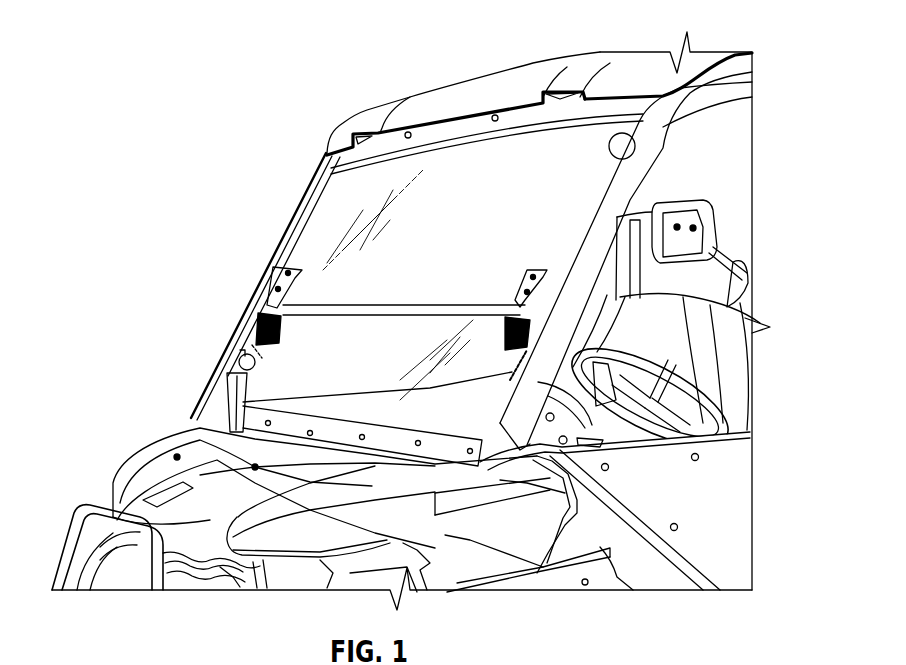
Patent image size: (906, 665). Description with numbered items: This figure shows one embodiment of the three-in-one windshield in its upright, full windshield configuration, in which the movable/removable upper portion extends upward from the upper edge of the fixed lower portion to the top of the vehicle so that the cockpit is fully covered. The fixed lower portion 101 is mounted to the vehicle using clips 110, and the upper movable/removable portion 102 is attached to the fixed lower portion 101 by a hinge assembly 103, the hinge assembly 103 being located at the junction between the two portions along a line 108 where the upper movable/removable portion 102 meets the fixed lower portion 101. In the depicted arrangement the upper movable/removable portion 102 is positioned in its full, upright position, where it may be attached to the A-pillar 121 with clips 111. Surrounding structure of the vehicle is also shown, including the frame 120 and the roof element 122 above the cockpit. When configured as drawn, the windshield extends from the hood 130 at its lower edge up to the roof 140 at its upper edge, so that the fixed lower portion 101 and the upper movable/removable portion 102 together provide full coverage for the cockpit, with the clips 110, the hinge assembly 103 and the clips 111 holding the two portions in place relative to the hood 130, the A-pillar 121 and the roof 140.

The fixed lower portion 101 is at (260, 383).
The upper movable/removable portion 102 is at (318, 212).
The hinge assembly 103 is at (517, 303).
The fold line 108 is at (342, 307).
The clips 110 is at (240, 362).
The clips 111 is at (637, 153).
The vehicle frame 120 is at (744, 63).
The A-pillar 121 is at (617, 203).
The roof 122 is at (597, 57).
The hood 130 is at (187, 433).
The roof 140 is at (460, 100).